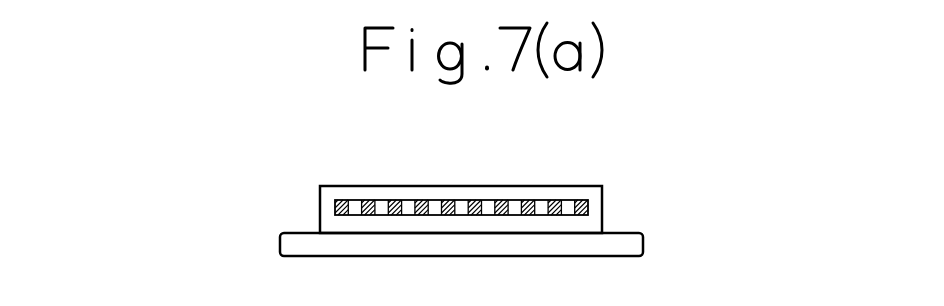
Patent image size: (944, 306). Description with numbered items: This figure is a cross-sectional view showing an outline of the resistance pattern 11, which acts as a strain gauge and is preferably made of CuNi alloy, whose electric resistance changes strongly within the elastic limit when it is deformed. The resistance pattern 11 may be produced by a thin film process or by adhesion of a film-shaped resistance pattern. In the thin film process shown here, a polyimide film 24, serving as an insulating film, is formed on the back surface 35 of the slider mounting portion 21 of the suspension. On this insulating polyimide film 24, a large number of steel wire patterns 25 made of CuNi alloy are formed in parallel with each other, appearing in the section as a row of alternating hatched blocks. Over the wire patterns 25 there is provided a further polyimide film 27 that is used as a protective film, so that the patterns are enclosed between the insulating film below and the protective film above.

The resistance pattern 11 is at (595, 183).
The substrate 21 is at (644, 242).
The polyimide film 24 is at (353, 224).
The steel wire patterns 25 is at (462, 210).
The polyimide film 27 is at (507, 191).
The back surface of the slider mounting portion 35 is at (527, 220).